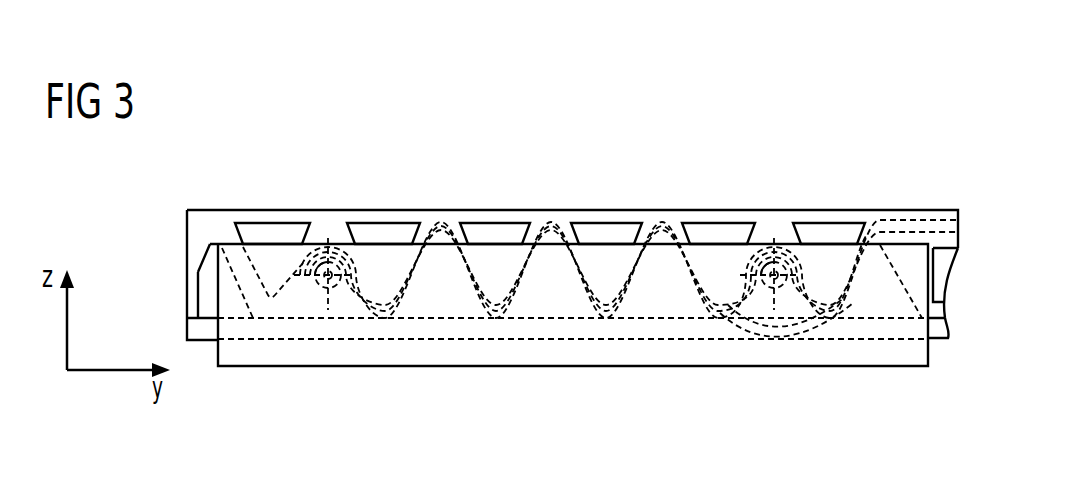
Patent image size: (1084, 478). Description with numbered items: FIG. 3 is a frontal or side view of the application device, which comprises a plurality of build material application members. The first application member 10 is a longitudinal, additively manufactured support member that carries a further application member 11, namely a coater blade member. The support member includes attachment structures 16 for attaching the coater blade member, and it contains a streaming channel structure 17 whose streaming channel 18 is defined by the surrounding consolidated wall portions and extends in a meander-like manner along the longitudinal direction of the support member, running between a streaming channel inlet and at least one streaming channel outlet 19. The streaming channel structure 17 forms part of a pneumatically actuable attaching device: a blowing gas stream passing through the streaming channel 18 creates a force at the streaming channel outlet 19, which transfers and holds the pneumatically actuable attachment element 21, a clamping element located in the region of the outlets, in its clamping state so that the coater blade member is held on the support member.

The first application member 10 is at (492, 212).
The further application member 11 is at (563, 352).
The attachment structures 16 is at (763, 258).
The streaming channel structure 17 is at (674, 222).
The streaming channel 18 is at (572, 291).
The streaming channel outlet 19 is at (779, 273).
The pneumatically actuable attachment element 21 is at (760, 298).